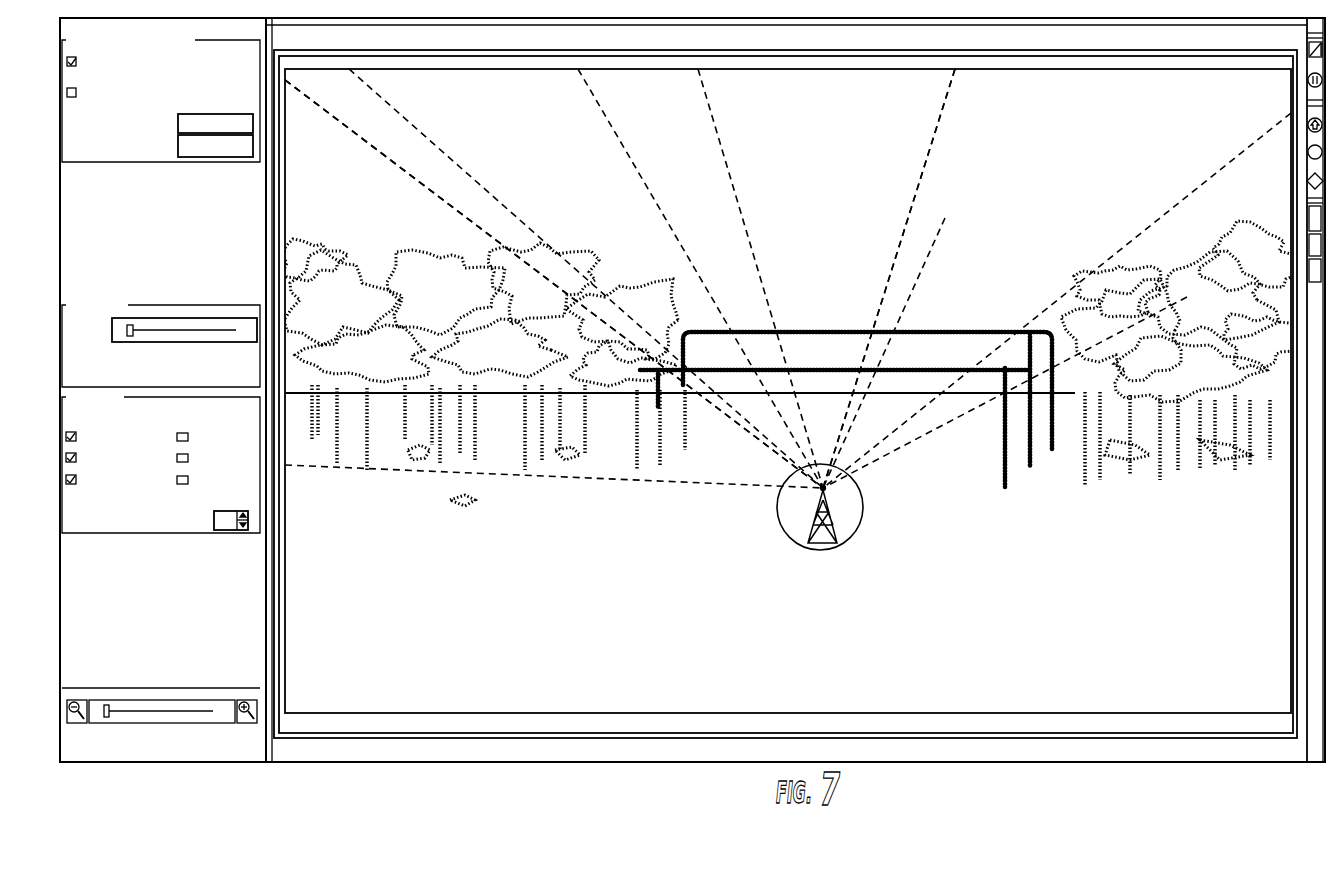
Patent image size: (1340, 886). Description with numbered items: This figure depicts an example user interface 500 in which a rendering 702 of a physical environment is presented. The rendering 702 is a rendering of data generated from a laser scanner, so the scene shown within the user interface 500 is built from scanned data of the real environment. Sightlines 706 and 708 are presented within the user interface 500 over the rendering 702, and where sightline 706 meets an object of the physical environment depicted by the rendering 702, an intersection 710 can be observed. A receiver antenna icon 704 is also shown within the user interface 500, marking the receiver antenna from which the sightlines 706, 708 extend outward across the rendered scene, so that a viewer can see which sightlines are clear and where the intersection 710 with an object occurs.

The user interface 500 is at (495, 763).
The rendering 702 is at (560, 445).
The receiver antenna icon 704 is at (847, 543).
The sightline 706 is at (926, 157).
The sightline 708 is at (357, 135).
The intersection 710 is at (868, 348).